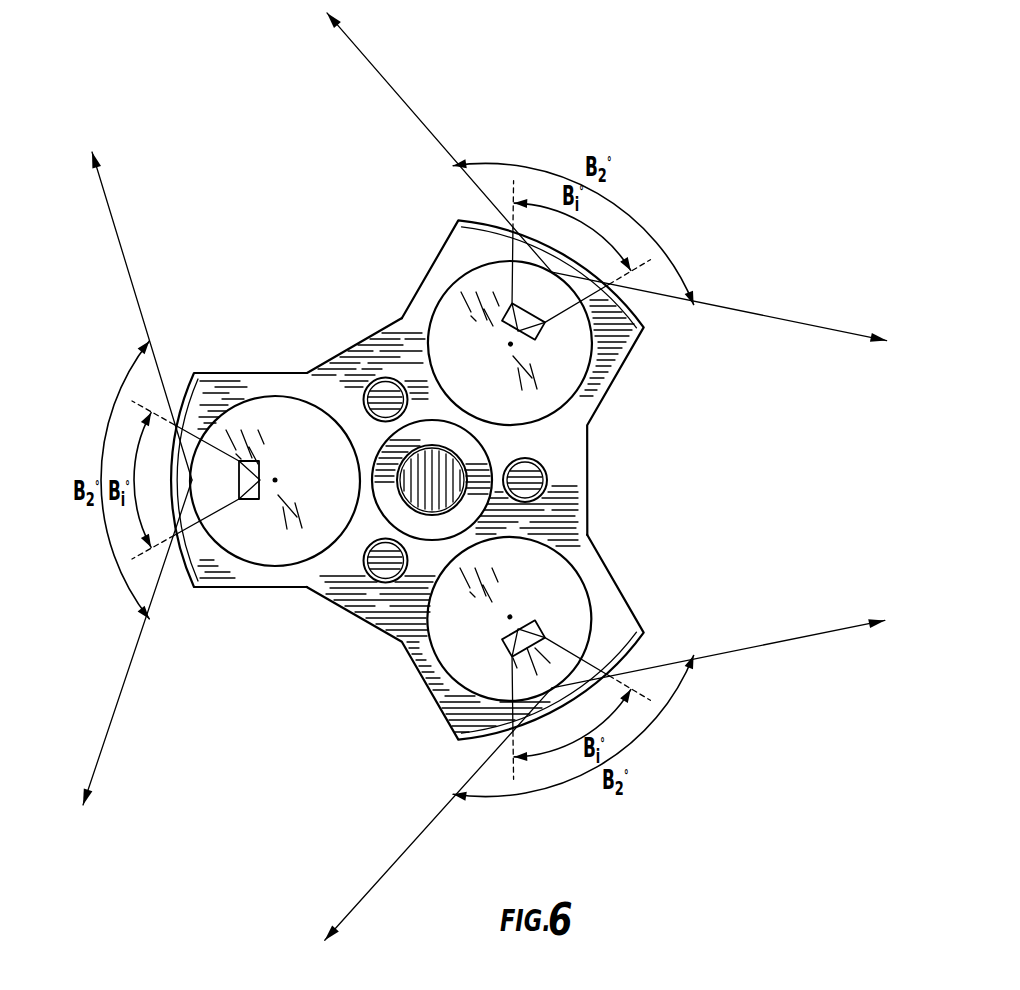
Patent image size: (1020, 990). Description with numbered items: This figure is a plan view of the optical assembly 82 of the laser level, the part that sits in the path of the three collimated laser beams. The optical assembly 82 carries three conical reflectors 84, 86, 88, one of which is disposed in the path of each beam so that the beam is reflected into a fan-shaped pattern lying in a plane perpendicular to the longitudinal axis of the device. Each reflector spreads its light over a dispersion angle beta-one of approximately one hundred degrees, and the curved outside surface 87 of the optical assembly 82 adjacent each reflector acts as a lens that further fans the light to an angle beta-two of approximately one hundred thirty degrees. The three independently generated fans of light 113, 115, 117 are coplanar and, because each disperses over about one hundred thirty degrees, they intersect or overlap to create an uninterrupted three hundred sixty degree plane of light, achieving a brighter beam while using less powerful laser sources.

The optical assembly 82 is at (357, 614).
The conical reflector 84 is at (291, 559).
The conical reflector 86 is at (574, 377).
The conical reflector 88 is at (574, 576).
The curved outside surface 87 is at (237, 500).
The fan of light 113 is at (105, 749).
The fan of light 115 is at (821, 329).
The fan of light 117 is at (727, 650).